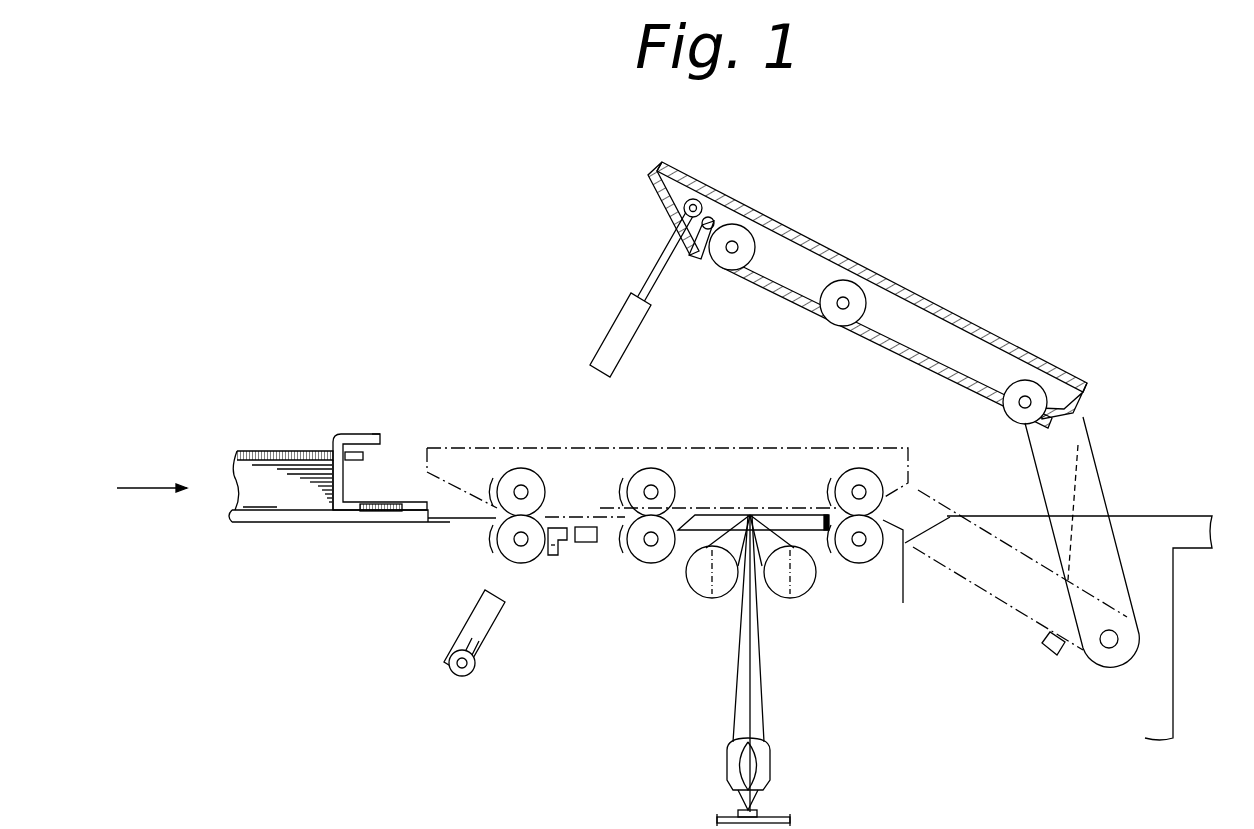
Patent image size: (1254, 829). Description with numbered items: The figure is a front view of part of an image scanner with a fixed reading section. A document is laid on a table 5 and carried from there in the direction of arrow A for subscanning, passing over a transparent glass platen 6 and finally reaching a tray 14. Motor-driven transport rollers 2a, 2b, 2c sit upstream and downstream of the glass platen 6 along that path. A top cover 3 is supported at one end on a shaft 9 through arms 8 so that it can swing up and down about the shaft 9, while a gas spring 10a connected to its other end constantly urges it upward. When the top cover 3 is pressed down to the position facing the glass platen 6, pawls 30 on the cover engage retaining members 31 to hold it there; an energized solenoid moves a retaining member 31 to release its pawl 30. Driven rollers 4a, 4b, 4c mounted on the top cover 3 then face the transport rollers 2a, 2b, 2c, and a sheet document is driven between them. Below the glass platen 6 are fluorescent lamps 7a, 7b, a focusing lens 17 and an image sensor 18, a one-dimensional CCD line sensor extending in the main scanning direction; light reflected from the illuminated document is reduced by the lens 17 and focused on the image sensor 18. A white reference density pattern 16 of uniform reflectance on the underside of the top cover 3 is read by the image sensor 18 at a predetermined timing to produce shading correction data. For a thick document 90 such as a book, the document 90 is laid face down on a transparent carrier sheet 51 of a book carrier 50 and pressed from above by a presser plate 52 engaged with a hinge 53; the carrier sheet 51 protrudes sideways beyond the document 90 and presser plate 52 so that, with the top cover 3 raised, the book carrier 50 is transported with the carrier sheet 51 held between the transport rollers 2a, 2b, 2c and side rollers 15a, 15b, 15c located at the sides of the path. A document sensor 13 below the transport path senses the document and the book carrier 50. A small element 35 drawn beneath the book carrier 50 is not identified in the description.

The document transport direction A is at (152, 473).
The top cover 3 is at (980, 323).
The reference density pattern 16 is at (947, 375).
The driven roller 4a is at (733, 270).
The driven roller 4b is at (840, 326).
The driven roller 4c is at (1013, 420).
The gas spring 10a is at (622, 322).
The pawl 30 is at (702, 263).
The arm 8 is at (1088, 472).
The shaft 9 is at (1108, 648).
The tray 14 is at (1188, 513).
The side roller 15a is at (521, 468).
The side roller 15b is at (651, 468).
The side roller 15c is at (859, 468).
The transport roller 2a is at (521, 565).
The transport roller 2b is at (651, 565).
The transport roller 2c is at (860, 565).
The document sensor 13 is at (583, 527).
The retaining member 31 is at (560, 557).
The glass platen 6 is at (793, 514).
The fluorescent lamp 7a is at (712, 599).
The fluorescent lamp 7b is at (790, 599).
The focusing lens 17 is at (770, 757).
The image sensor 18 is at (758, 812).
The table 5 is at (458, 512).
The book carrier 50 is at (382, 428).
The hinge 53 is at (340, 433).
The presser plate 52 is at (262, 450).
The document 90 is at (273, 483).
The carrier sheet 51 is at (300, 517).
The friction pad 35 is at (382, 510).